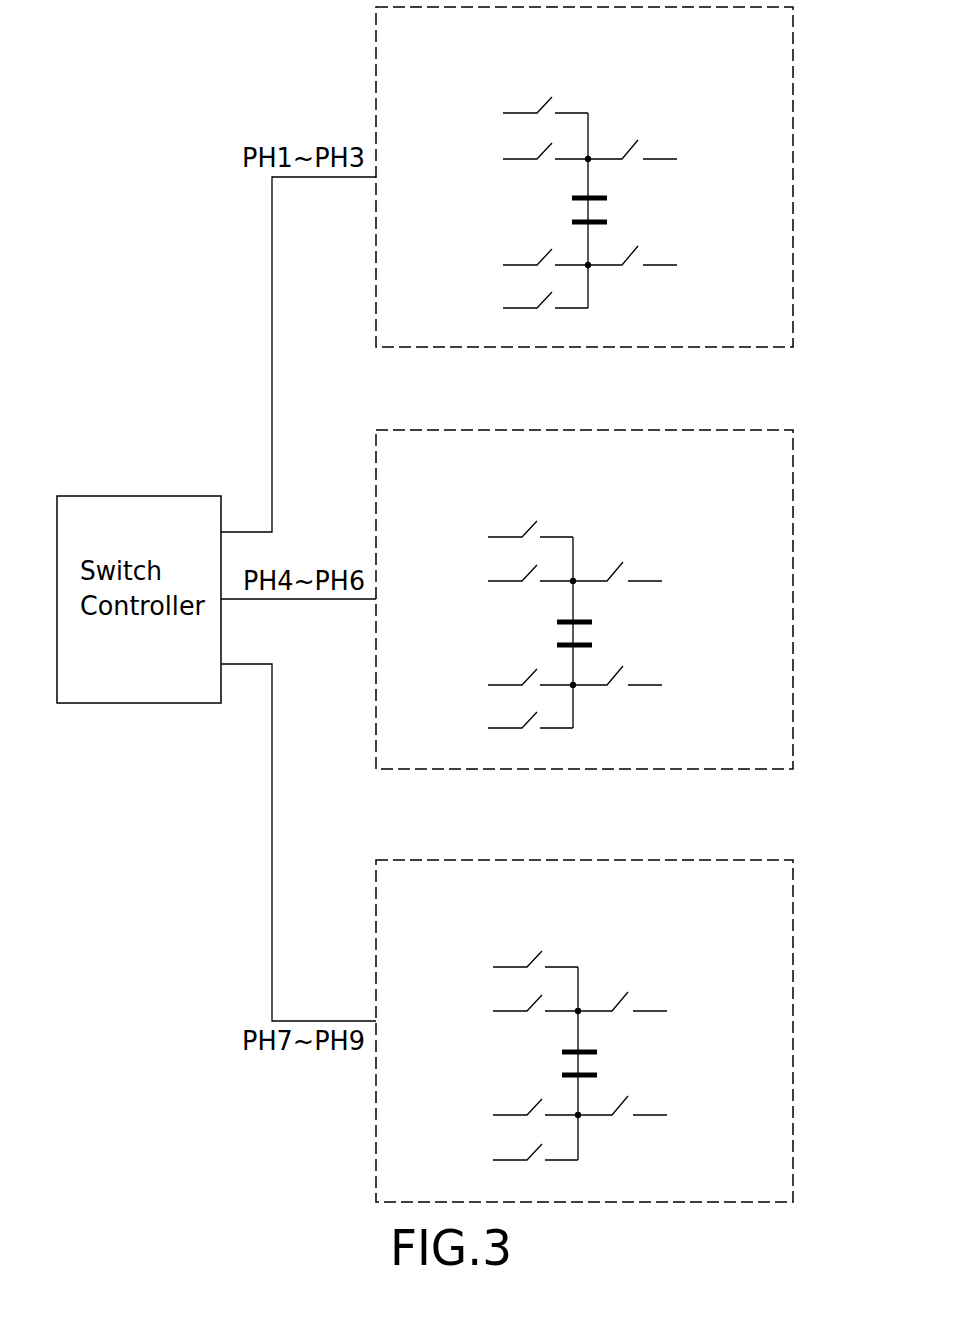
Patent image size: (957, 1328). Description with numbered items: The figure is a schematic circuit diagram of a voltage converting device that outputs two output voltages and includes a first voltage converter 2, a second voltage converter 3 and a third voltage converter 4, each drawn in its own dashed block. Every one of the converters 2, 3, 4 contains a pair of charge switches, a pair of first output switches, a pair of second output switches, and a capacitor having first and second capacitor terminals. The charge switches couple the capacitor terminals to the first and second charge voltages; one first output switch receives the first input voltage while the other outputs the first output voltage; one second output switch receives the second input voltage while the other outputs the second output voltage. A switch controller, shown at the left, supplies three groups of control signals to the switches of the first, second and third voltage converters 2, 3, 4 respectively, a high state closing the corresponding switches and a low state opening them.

The first voltage converter 2 is at (795, 177).
The second voltage converter 3 is at (795, 597).
The third voltage converter 4 is at (795, 1027).